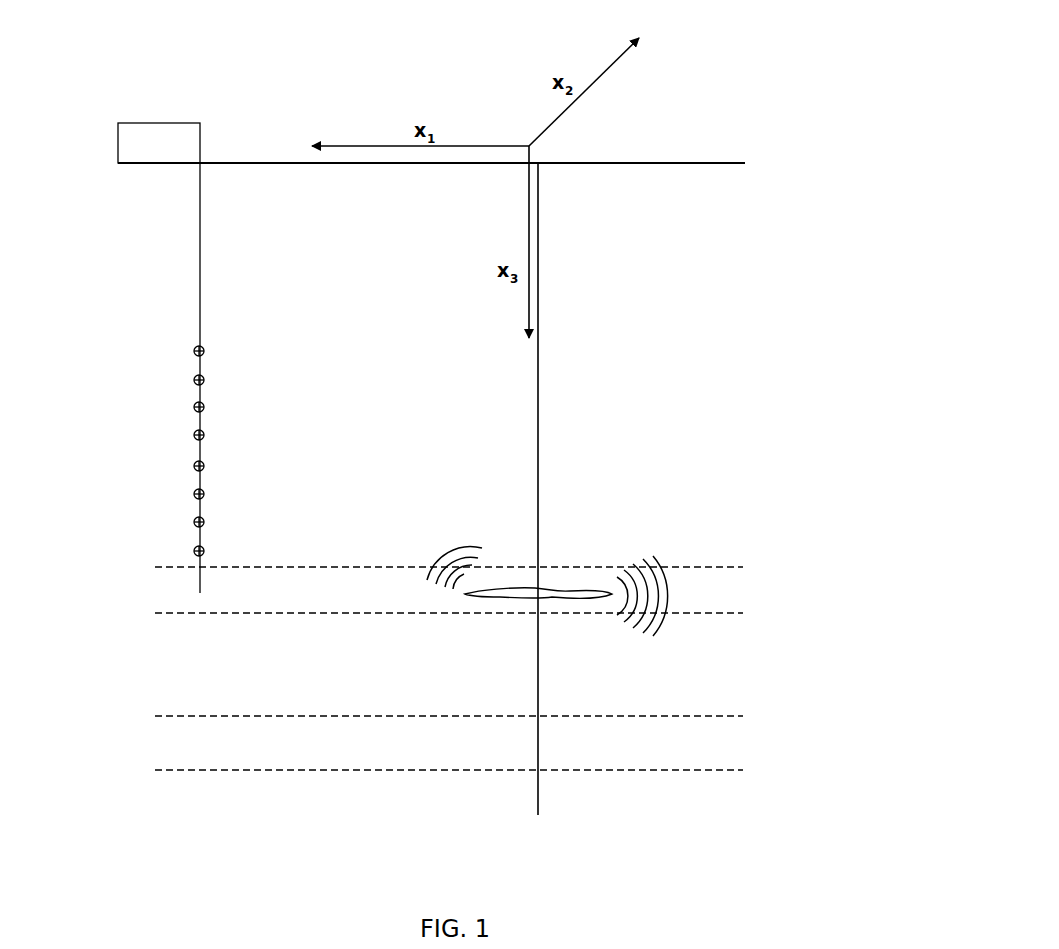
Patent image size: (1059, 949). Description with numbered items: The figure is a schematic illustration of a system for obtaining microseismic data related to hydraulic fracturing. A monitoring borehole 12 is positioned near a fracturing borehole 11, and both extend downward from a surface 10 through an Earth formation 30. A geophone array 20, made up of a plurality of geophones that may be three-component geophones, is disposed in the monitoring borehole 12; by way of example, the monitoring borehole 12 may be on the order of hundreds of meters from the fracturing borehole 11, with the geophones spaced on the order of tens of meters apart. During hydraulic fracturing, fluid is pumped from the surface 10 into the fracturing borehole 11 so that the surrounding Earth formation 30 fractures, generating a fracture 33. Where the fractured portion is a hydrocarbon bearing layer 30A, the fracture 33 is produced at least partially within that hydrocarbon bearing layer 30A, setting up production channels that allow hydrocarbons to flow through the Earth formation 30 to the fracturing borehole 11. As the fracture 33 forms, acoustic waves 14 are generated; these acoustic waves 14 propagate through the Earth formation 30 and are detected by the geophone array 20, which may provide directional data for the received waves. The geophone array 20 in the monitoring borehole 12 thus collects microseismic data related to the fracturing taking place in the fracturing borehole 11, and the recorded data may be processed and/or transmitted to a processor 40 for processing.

The surface 10 is at (275, 163).
The fracturing borehole 11 is at (538, 271).
The monitoring borehole 12 is at (200, 221).
The acoustic waves 14 is at (453, 549).
The geophone array 20 is at (204, 349).
The Earth formation 30 is at (130, 287).
The hydrocarbon bearing layer 30A is at (396, 601).
The fracture 33 is at (552, 598).
The processor 40 is at (157, 122).